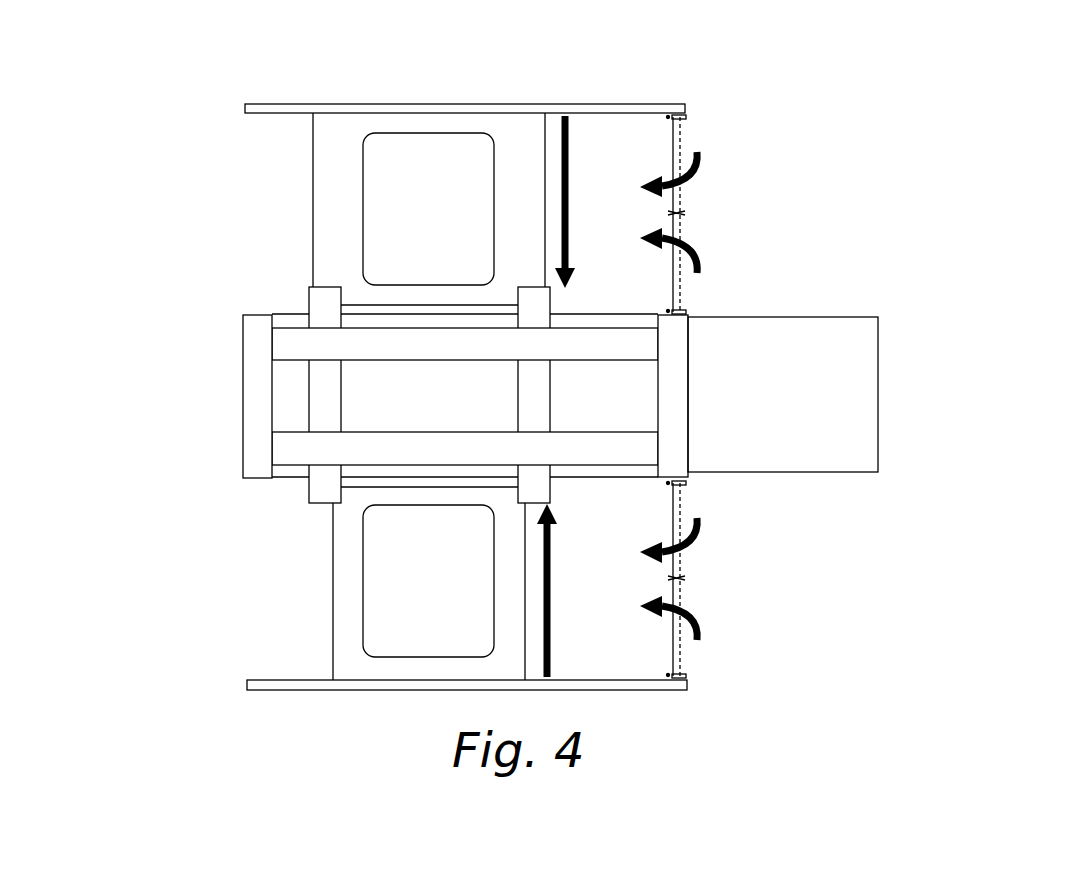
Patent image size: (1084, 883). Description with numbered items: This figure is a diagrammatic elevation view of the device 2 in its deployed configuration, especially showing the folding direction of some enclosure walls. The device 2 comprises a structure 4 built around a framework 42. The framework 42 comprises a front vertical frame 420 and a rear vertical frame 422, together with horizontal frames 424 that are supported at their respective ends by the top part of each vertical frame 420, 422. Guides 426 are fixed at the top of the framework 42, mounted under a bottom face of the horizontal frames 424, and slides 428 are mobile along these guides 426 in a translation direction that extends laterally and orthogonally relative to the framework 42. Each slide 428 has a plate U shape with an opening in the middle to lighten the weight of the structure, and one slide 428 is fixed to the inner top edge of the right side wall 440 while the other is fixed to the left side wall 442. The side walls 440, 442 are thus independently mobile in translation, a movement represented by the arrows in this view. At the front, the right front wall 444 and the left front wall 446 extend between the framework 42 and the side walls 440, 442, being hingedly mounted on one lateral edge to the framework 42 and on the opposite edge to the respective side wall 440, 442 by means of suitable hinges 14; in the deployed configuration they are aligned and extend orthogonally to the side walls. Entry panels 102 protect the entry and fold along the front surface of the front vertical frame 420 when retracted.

The device 2 is at (501, 345).
The structure 4 is at (213, 487).
The hinges 14 is at (683, 507).
The framework 42 is at (243, 337).
The entry panels 102 is at (837, 338).
The front vertical frame 420 is at (668, 353).
The rear vertical frame 422 is at (262, 372).
The horizontal frames 424 is at (298, 342).
The guides 426 is at (328, 490).
The slides 428 is at (333, 228).
The right side wall 440 is at (247, 685).
The left side wall 442 is at (247, 107).
The right front wall 444 is at (683, 565).
The left front wall 446 is at (677, 197).